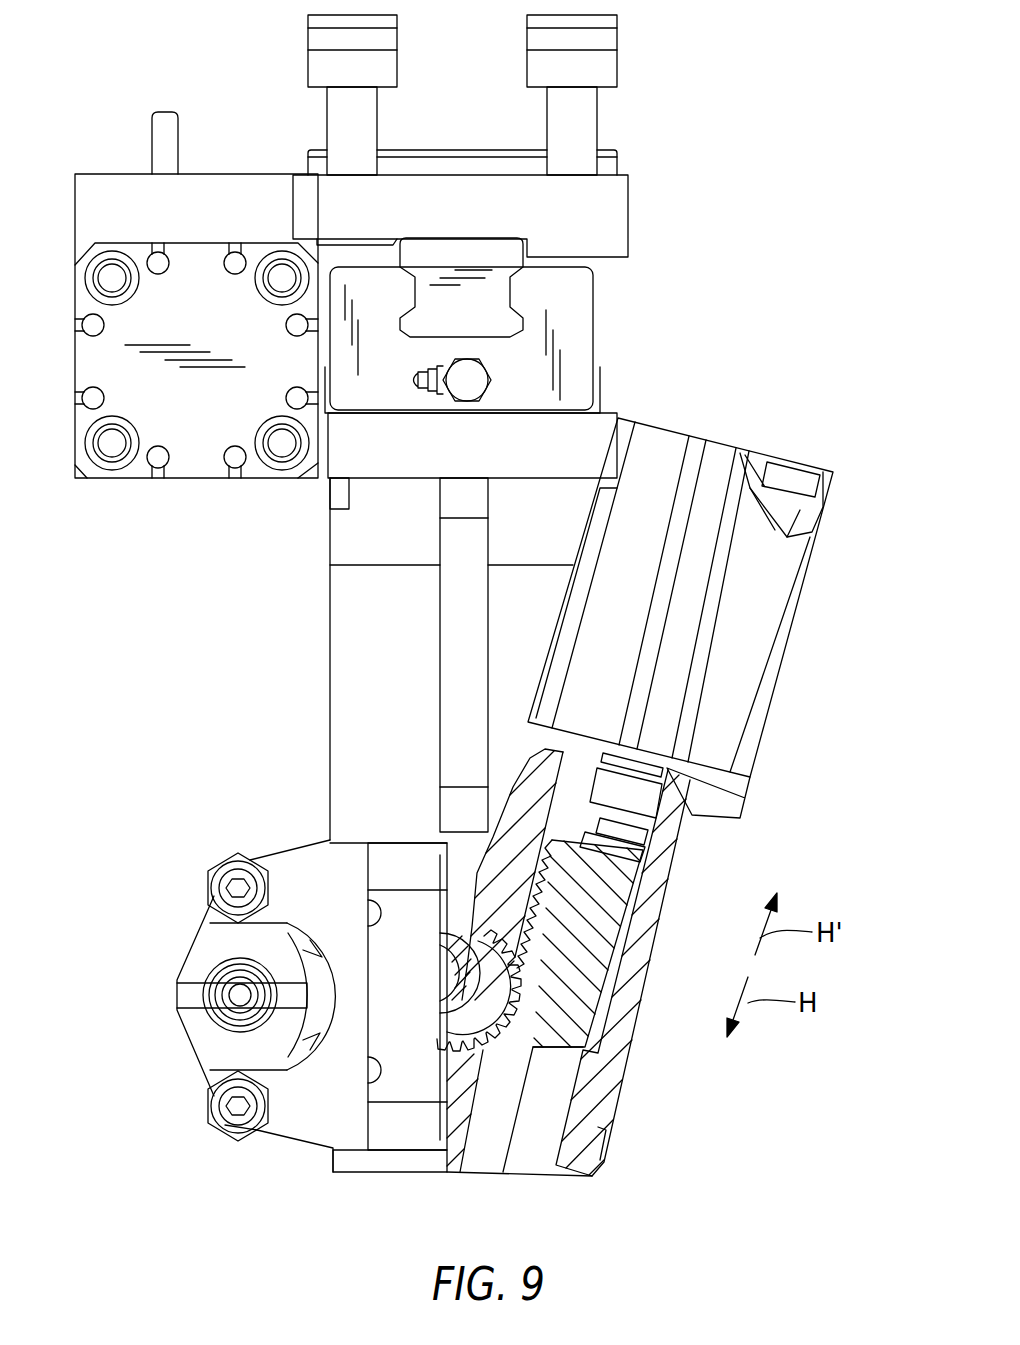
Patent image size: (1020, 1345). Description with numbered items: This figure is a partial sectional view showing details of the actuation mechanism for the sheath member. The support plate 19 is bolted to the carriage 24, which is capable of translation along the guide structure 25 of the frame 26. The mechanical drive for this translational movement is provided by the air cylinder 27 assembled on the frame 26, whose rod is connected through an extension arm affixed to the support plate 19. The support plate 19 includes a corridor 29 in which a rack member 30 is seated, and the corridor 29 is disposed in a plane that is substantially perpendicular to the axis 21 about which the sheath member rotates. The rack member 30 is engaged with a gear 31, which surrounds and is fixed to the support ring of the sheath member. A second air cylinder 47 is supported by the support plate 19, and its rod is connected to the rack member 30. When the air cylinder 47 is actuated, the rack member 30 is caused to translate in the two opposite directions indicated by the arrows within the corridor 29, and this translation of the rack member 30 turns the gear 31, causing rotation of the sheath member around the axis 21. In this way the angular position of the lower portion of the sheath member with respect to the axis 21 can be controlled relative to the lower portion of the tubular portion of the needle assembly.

The support plate 19 is at (353, 698).
The axis 21 is at (495, 955).
The carriage 24 is at (563, 337).
The guide structure 25 is at (497, 290).
The frame 26 is at (622, 206).
The air cylinder 27 is at (178, 456).
The corridor 29 is at (565, 1097).
The rack member 30 is at (597, 943).
The gear 31 is at (465, 1045).
The air cylinder 47 is at (740, 637).